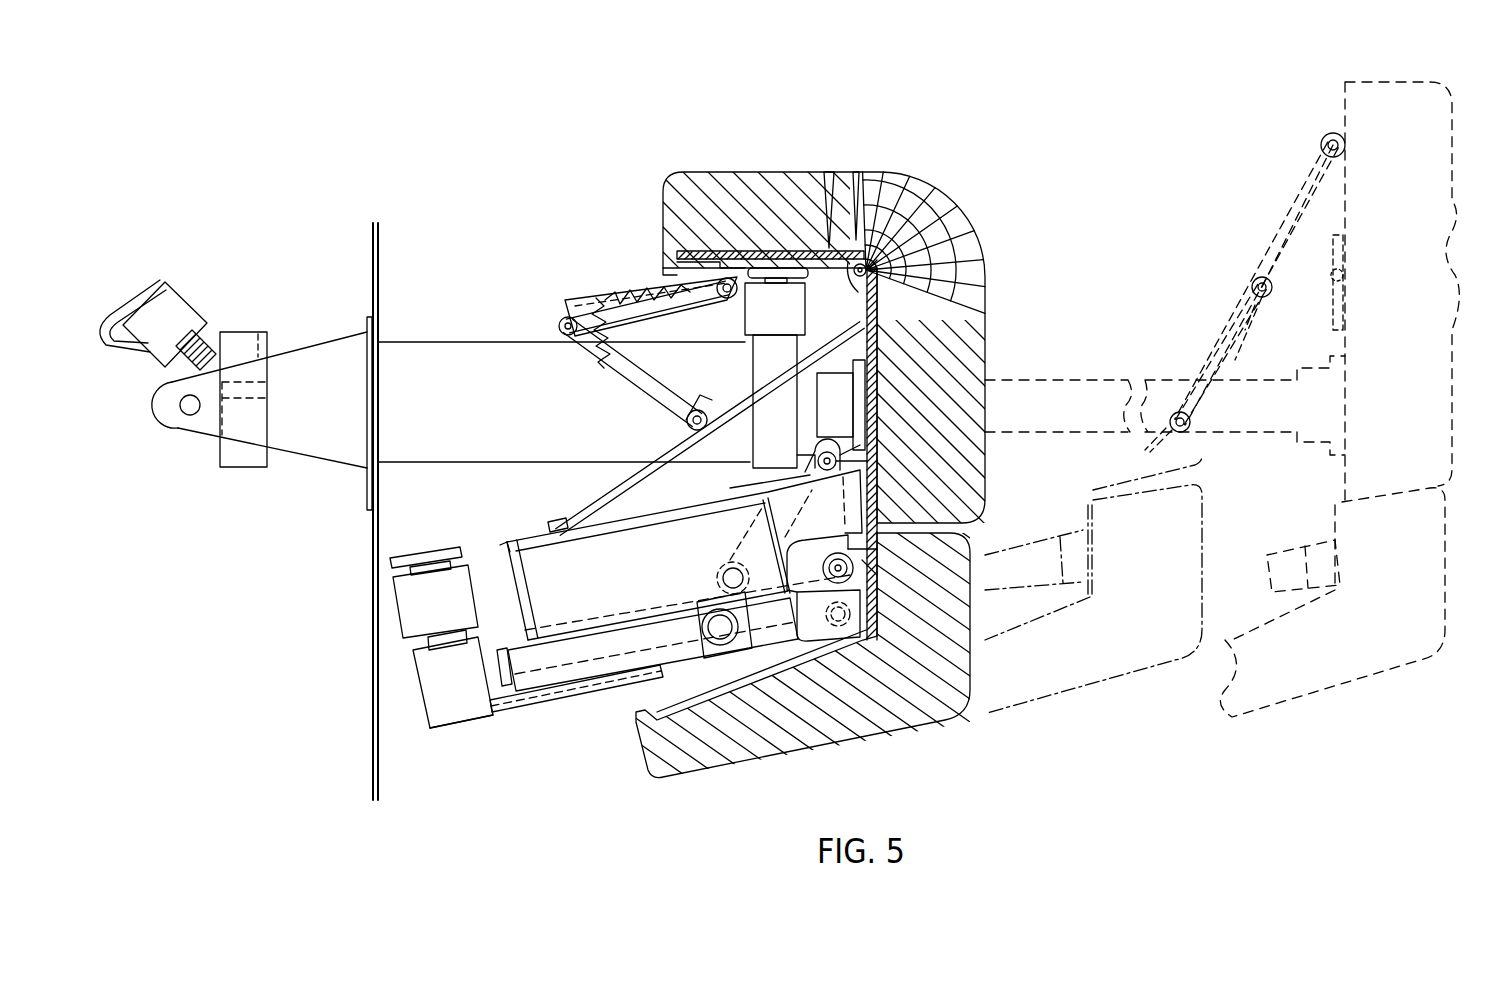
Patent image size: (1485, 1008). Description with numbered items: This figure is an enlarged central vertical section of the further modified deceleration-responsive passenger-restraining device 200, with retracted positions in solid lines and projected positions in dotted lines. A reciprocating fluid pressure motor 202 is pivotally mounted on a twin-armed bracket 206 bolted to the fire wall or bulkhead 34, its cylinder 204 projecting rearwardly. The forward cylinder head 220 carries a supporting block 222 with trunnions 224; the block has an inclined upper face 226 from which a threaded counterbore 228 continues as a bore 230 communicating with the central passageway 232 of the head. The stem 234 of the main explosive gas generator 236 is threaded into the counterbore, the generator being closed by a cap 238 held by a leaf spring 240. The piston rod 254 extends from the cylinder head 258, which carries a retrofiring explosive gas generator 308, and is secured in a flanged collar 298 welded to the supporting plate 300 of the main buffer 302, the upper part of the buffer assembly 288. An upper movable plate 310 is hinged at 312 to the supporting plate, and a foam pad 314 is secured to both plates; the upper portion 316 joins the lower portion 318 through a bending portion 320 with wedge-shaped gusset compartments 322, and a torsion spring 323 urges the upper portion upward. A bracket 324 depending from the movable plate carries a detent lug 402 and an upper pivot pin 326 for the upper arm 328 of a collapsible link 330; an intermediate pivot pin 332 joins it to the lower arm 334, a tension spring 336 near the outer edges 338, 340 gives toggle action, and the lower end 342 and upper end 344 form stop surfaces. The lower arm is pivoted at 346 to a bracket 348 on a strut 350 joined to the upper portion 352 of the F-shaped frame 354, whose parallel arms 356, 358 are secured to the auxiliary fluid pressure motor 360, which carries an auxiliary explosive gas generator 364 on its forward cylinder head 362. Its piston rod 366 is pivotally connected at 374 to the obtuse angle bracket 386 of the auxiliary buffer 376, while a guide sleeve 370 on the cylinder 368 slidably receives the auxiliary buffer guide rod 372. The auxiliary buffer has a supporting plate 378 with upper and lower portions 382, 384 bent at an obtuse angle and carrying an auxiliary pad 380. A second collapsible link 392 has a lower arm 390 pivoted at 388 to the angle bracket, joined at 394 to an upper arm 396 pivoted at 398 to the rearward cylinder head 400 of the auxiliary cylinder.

The fire wall or bulkhead 34 is at (373, 236).
The deceleration-responsive passenger-restraining device 200 is at (936, 180).
The reciprocating fluid pressure motor 202 is at (452, 340).
The cylinder 204 is at (472, 464).
The twin-armed bracket 206 is at (356, 335).
The forward cylinder head 220 is at (252, 470).
The supporting block 222 is at (168, 394).
The trunnions 224 is at (190, 408).
The inclined upper face 226 is at (158, 370).
The threaded counterbore 228 is at (208, 340).
The bore 230 is at (255, 342).
The central bore or passageway 232 is at (268, 374).
The stem 234 is at (182, 346).
The main explosive gas generator 236 is at (185, 266).
The cap 238 is at (158, 279).
The leaf spring 240 is at (100, 334).
The piston rod 254 is at (812, 438).
The cylinder head 258 is at (752, 352).
The buffer assembly 288 is at (994, 527).
The flanged collar 298 is at (816, 410).
The supporting plate 300 is at (866, 318).
The main buffer 302 is at (989, 315).
The retrofiring explosive gas generator 308 is at (790, 320).
The upper movable plate 310 is at (761, 225).
The hinge 312 is at (938, 420).
The pad 314 is at (989, 345).
The upper portion 316 is at (800, 171).
The lower portion 318 is at (988, 450).
The bending portion 320 is at (966, 212).
The wedge-shaped internal gusset compartments 322 is at (836, 174).
The torsion spring 323 is at (857, 277).
The bracket 324 is at (756, 252).
The upper pivot pin 326 is at (726, 299).
The upper arm 328 is at (589, 300).
The collapsible link 330 is at (559, 318).
The intermediate pivot pin 332 is at (560, 326).
The lower arm 334 is at (597, 356).
The tension spring 336 is at (700, 312).
The outer edge 338 is at (722, 289).
The outer edge 340 is at (625, 375).
The lower end 342 is at (604, 300).
The upper end 344 is at (559, 329).
The pivot 346 is at (688, 425).
The bracket 348 is at (740, 392).
The strut 350 is at (612, 495).
The upper portion 352 is at (665, 514).
The F-shaped frame 354 is at (515, 526).
The parallel arm 356 is at (518, 582).
The parallel arm 358 is at (760, 510).
The auxiliary reciprocatory fluid pressure motor 360 is at (558, 706).
The forward cylinder head 362 is at (462, 729).
The auxiliary explosive gas generator 364 is at (390, 607).
The piston rod 366 is at (813, 596).
The cylinder 368 is at (622, 682).
The guide sleeve 370 is at (641, 612).
The auxiliary buffer guide rod 372 is at (500, 666).
The pivotal connection 374 is at (880, 620).
The auxiliary buffer 376 is at (968, 720).
The supporting plate 378 is at (878, 651).
The auxiliary pad 380 is at (906, 725).
The upper portion 382 is at (879, 578).
The lower portion 384 is at (760, 712).
The obtuse angle bracket 386 is at (850, 642).
The pivotal connection 388 is at (873, 549).
The lower arm 390 is at (870, 527).
The collapsible link 392 is at (858, 446).
The pivot 394 is at (836, 462).
The upper arm 396 is at (770, 480).
The pivot 398 is at (726, 566).
The rearward cylinder head 400 is at (702, 630).
The detent lug 402 is at (676, 264).